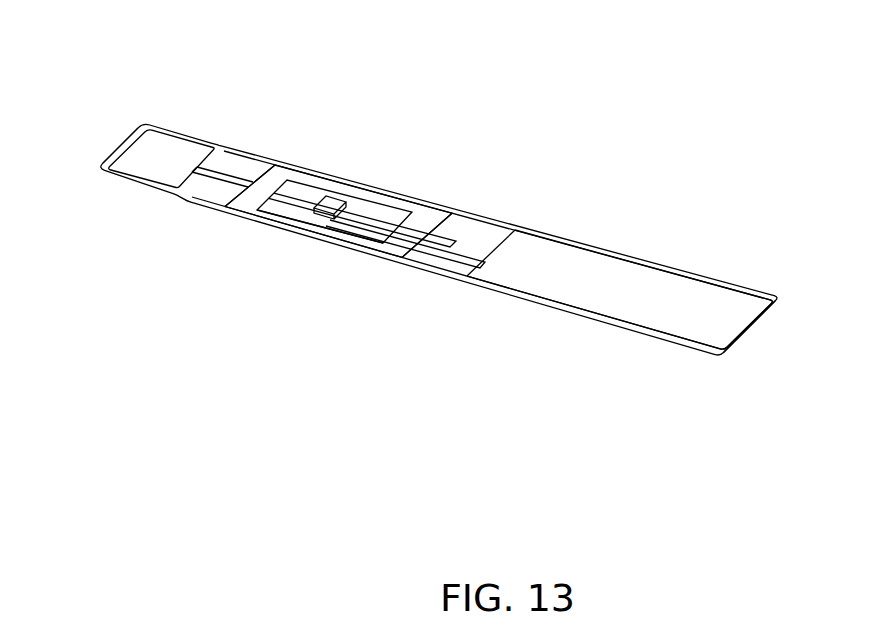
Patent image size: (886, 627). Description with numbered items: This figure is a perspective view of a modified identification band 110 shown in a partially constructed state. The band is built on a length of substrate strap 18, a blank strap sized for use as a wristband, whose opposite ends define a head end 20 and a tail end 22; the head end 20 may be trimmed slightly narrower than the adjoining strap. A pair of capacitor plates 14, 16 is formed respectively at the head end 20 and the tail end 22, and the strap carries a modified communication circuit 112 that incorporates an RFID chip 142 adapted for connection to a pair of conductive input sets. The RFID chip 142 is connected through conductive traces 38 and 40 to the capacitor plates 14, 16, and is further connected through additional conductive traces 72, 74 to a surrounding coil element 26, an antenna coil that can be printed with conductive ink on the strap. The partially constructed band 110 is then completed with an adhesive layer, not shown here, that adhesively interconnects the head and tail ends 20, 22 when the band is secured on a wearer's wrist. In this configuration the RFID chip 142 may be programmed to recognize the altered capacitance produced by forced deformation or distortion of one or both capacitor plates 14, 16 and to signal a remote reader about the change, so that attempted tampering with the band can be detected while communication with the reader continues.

The modified identification band 110 is at (562, 143).
The modified communication circuit 112 is at (400, 102).
The capacitor plate 14 is at (147, 152).
The capacitor plate 16 is at (672, 283).
The substrate strap 18 is at (441, 270).
The head end 20 is at (108, 172).
The tail end 22 is at (750, 333).
The antenna coil 26 is at (397, 250).
The conductive trace 38 is at (223, 173).
The conductive trace 40 is at (375, 207).
The additional conductive trace 72 is at (292, 218).
The additional conductive trace 74 is at (363, 255).
The RFID chip 142 is at (335, 198).